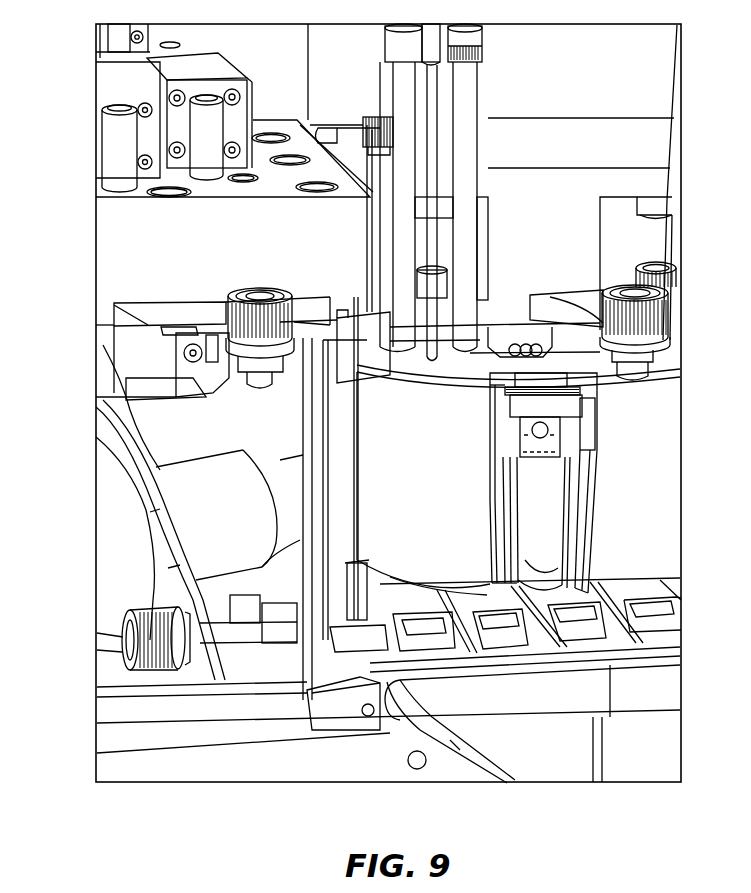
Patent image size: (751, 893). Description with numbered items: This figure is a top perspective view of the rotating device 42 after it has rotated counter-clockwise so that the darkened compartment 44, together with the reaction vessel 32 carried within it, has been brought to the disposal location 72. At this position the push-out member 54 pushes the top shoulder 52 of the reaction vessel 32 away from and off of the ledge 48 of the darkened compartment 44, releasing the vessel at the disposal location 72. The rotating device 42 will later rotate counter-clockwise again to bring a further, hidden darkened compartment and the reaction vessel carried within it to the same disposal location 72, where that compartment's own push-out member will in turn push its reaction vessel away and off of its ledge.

The reaction vessel 32 is at (543, 500).
The rotating device 42 is at (407, 427).
The darkened compartment 44 is at (577, 463).
The ledge 48 is at (494, 392).
The top shoulder 52 is at (577, 403).
The push-out member 54 is at (531, 432).
The disposal location 72 is at (547, 683).